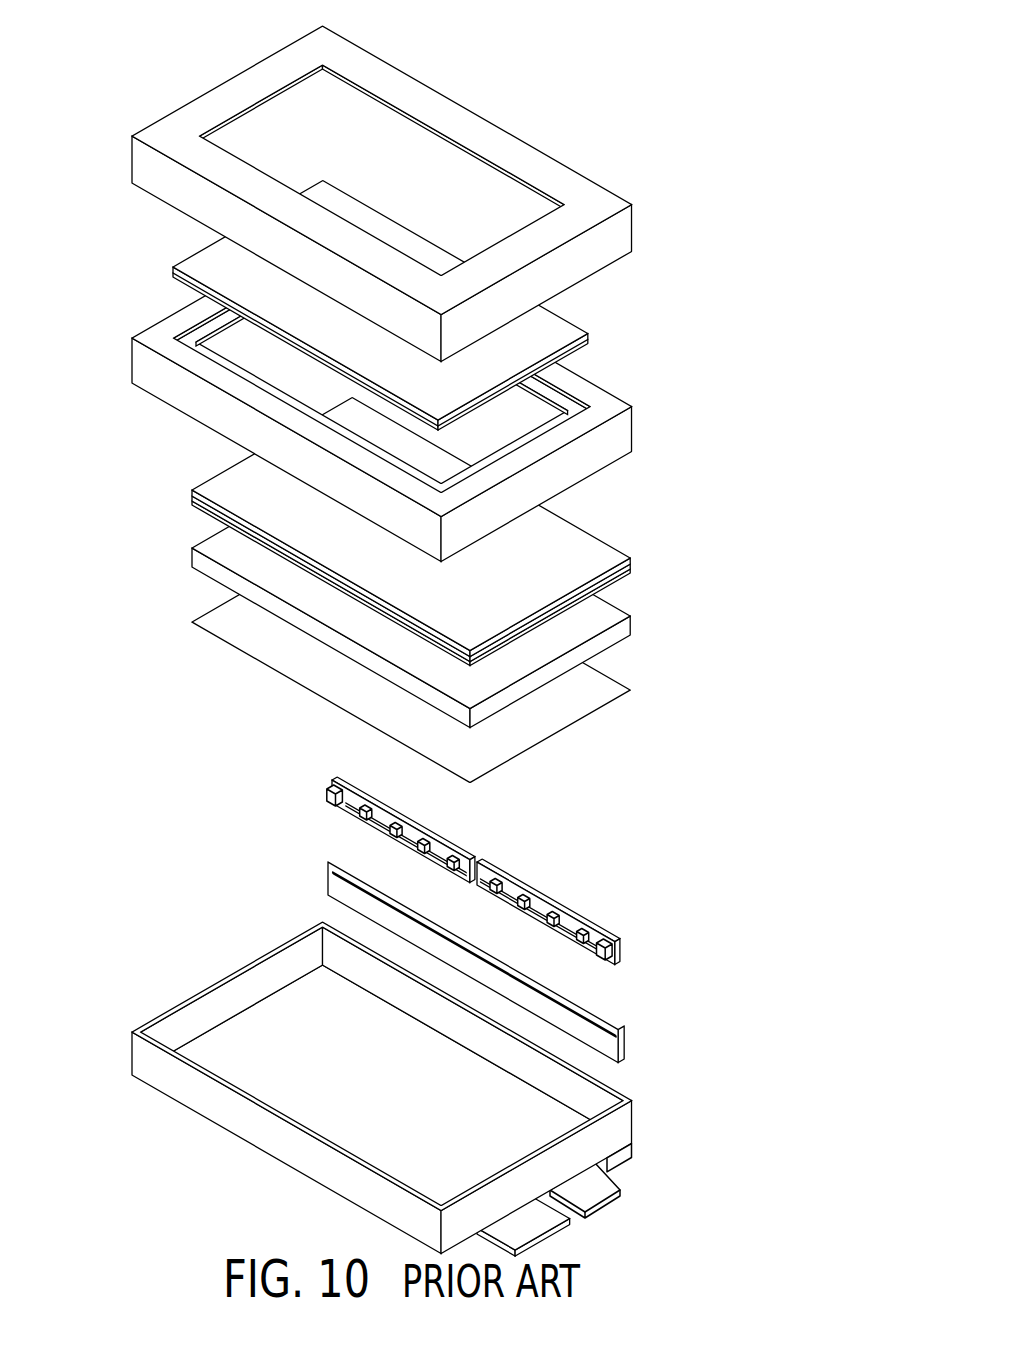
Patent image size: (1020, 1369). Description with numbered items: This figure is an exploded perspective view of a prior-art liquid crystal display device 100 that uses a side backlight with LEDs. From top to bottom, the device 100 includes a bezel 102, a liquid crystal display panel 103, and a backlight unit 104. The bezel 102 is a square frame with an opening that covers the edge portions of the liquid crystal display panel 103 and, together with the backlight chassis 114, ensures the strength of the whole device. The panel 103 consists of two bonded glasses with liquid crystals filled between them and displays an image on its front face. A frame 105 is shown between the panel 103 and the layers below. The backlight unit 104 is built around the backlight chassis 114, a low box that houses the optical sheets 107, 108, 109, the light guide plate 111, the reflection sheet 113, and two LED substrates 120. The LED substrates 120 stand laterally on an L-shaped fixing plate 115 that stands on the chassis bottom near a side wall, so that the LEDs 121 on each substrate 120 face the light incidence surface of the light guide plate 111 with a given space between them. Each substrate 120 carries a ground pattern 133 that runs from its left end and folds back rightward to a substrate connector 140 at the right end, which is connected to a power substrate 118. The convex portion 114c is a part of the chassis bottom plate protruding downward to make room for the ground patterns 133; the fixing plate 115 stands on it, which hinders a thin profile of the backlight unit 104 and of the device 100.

The liquid crystal display device 100 is at (718, 235).
The bezel 102 is at (513, 146).
The liquid crystal display panel 103 is at (216, 259).
The backlight unit 104 is at (670, 372).
The frame 105 is at (145, 374).
The optical sheet 107 is at (220, 480).
The optical sheet 108 is at (198, 497).
The optical sheet 109 is at (196, 502).
The light guide plate 111 is at (190, 553).
The reflection sheet 113 is at (215, 632).
The backlight chassis 114 is at (237, 972).
The convex portion 114c is at (620, 1160).
The fixing plate 115 is at (590, 1020).
The power substrate 118 is at (612, 1201).
The LED substrate 120 is at (422, 833).
The LED 121 is at (388, 815).
The ground pattern 133 is at (400, 840).
The substrate connector 140 is at (325, 787).